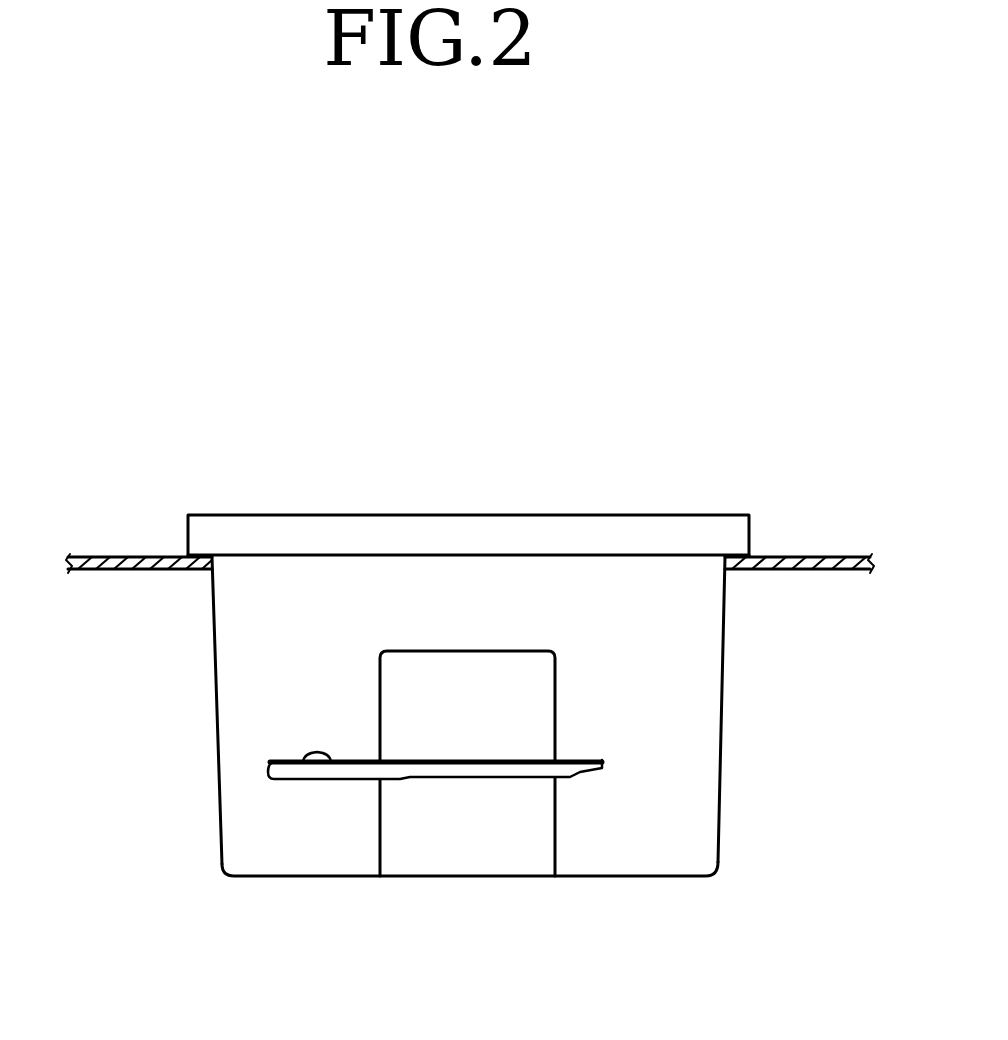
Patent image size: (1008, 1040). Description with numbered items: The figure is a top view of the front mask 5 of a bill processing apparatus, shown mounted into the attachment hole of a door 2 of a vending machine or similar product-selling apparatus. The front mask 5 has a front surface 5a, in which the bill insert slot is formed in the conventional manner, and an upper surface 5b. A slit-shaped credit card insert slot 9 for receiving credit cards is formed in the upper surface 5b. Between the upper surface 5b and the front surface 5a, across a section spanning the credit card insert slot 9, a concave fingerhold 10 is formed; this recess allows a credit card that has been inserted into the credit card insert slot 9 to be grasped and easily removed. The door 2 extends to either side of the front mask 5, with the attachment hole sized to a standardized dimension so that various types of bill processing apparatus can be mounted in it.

The door 2 is at (800, 562).
The front mask 5 is at (506, 746).
The front surface 5a is at (653, 877).
The upper surface 5b is at (694, 673).
The credit card insert slot 9 is at (328, 762).
The concave fingerhold 10 is at (493, 834).